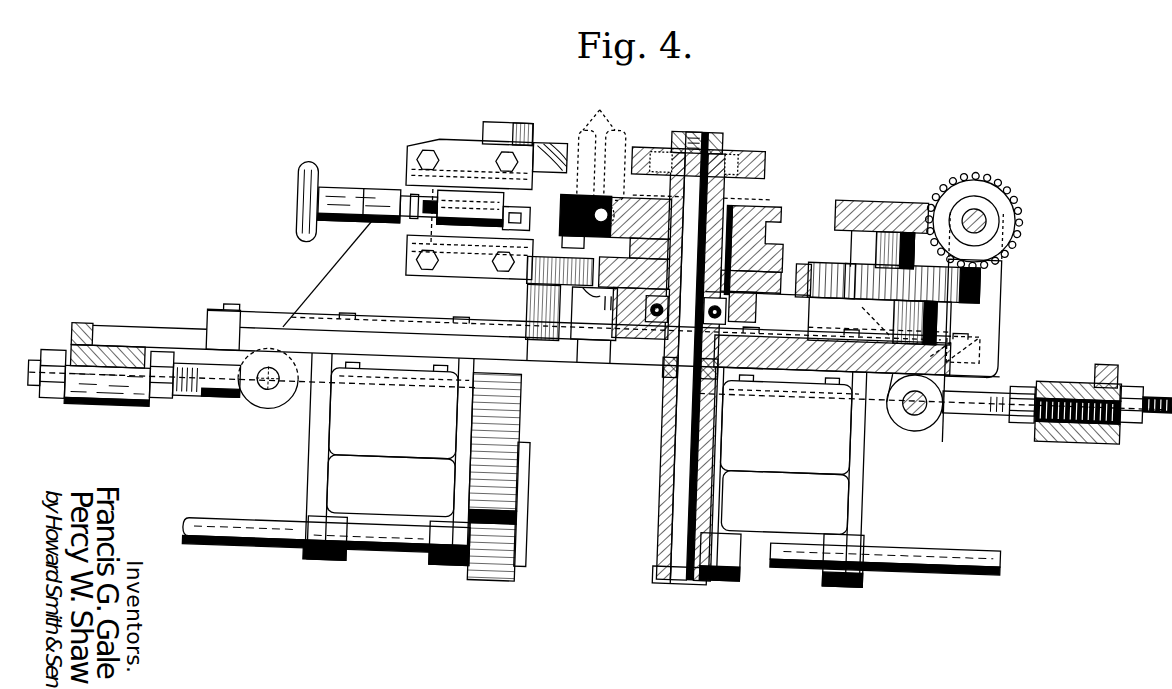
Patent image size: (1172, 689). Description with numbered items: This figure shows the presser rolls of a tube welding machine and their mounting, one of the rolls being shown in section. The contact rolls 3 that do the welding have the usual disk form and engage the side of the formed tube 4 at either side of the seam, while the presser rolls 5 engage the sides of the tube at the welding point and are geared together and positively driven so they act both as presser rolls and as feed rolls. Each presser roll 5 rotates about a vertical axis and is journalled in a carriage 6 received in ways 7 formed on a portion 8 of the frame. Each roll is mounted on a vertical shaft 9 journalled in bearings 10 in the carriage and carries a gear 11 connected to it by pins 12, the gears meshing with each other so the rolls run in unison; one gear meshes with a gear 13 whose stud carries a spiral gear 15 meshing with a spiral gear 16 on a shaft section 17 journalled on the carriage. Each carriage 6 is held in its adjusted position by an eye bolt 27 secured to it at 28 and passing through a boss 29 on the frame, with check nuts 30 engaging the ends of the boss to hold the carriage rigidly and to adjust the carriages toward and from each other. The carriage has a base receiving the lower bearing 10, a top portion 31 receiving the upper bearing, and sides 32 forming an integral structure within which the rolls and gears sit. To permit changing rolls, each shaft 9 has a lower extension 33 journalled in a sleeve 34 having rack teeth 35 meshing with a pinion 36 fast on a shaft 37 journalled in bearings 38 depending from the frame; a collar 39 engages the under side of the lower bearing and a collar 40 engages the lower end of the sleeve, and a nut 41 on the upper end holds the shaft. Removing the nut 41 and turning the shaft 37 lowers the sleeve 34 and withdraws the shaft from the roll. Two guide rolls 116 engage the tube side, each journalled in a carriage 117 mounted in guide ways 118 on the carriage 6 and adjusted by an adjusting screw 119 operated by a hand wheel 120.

The contact rolls 3 is at (602, 144).
The formed tube 4 is at (573, 246).
The presser rolls 5 is at (570, 186).
The carriage 6 is at (783, 151).
The ways 7 is at (215, 331).
The portion of the frame 8 is at (83, 341).
The vertical shaft 9 is at (770, 205).
The bearings 10 is at (716, 148).
The gear 11 is at (572, 299).
The pins 12 is at (775, 216).
The gear 13 is at (982, 262).
The spiral gear 15 is at (864, 194).
The spiral gear 16 is at (1002, 176).
The shaft section 17 is at (981, 207).
The eye bolt 27 is at (223, 410).
The securing point of eye bolt 28 is at (269, 401).
The boss 29 is at (110, 420).
The check nuts 30 is at (53, 411).
The top portion 31 is at (455, 148).
The sides 32 is at (349, 265).
The extension 33 is at (683, 495).
The sleeve 34 is at (664, 418).
The rack teeth 35 is at (522, 431).
The pinion 36 is at (503, 586).
The shaft 37 is at (407, 562).
The bearings 38 is at (332, 571).
The collar 39 is at (664, 367).
The collar 40 is at (671, 578).
The nut 41 is at (511, 131).
The guide rolls 116 is at (542, 217).
The carriage 117 is at (464, 205).
The guide ways 118 is at (415, 206).
The adjusting screw 119 is at (401, 197).
The hand wheel 120 is at (294, 201).